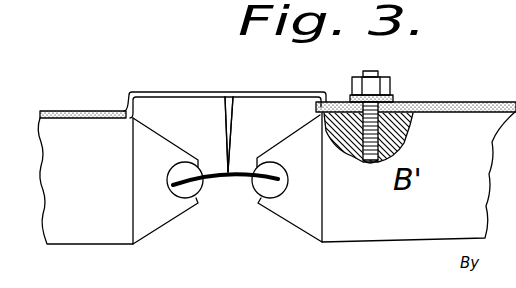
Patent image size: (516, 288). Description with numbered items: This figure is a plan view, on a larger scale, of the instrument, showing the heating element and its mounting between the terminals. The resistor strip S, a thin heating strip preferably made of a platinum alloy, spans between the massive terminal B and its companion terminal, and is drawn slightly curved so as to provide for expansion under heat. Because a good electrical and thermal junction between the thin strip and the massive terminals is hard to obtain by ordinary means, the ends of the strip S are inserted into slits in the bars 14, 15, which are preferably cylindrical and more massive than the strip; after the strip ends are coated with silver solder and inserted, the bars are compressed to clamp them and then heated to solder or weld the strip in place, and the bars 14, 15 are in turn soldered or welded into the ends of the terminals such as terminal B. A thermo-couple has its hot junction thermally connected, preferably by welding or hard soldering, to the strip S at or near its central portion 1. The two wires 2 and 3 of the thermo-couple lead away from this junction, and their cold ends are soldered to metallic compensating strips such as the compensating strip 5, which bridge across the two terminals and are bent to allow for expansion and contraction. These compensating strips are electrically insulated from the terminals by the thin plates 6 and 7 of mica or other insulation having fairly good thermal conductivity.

The central portion 1 is at (230, 170).
The thermo-couple wire 2 is at (223, 117).
The thermo-couple wire 3 is at (237, 116).
The compensating strip 5 is at (170, 92).
The insulating plate 6 is at (445, 113).
The insulating plate 7 is at (53, 111).
The bar 14 is at (272, 192).
The bar 15 is at (183, 192).
The resistor strip S is at (235, 177).
The terminal B is at (85, 181).